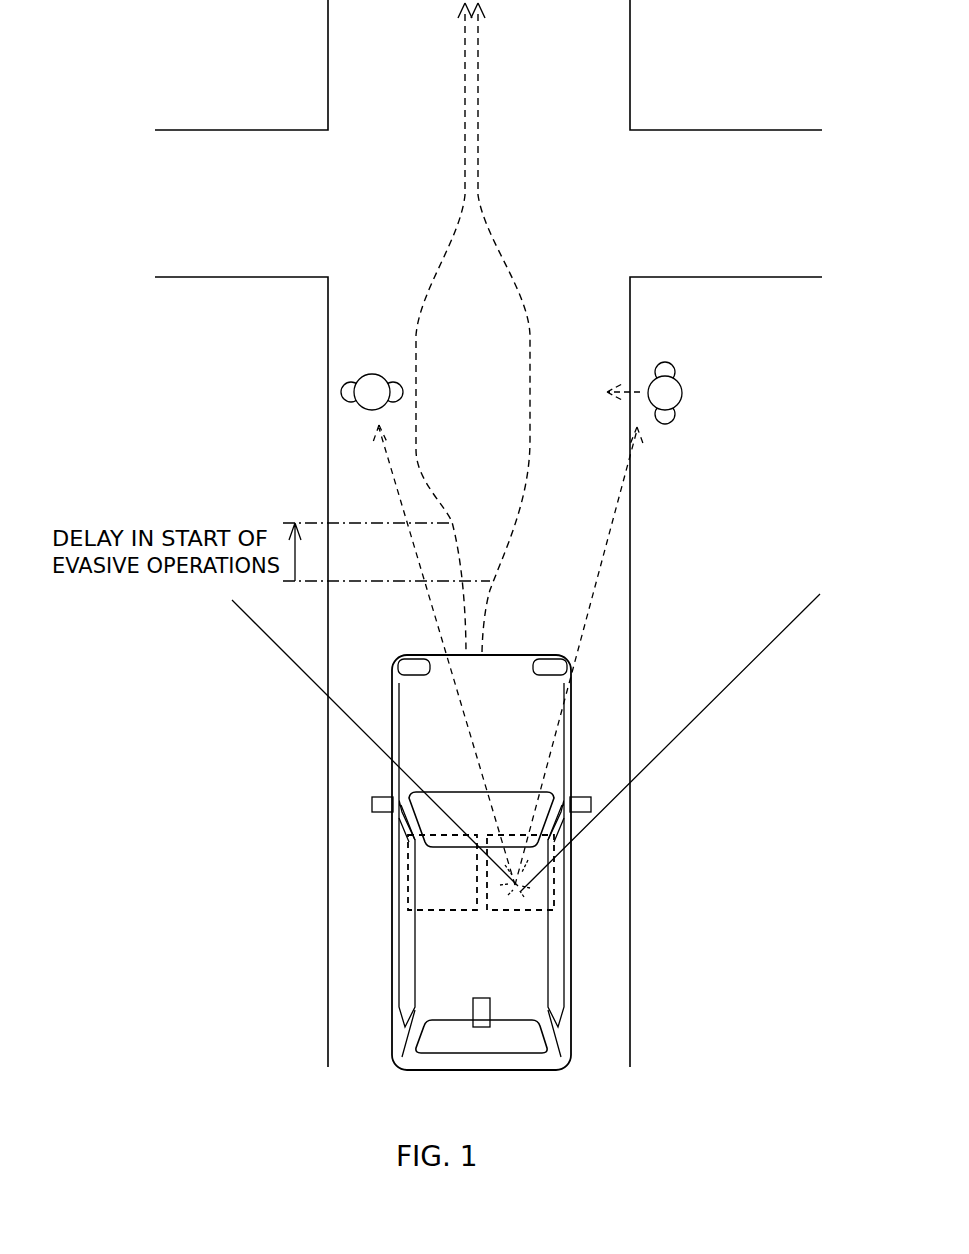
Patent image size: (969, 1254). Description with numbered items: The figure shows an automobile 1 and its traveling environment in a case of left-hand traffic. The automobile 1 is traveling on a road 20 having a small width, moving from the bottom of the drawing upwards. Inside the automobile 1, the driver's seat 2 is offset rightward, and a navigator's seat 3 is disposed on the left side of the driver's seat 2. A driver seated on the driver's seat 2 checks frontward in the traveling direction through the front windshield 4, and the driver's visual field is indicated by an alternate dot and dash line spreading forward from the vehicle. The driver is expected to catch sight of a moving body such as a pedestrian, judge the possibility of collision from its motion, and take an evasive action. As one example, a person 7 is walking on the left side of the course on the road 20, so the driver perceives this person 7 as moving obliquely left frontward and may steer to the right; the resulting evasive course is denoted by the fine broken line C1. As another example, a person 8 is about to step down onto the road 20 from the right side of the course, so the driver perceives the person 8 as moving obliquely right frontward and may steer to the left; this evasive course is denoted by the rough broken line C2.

The automobile 1 is at (352, 887).
The driver's seat 2 is at (558, 905).
The navigator's seat 3 is at (437, 890).
The front windshield 4 is at (512, 810).
The person 7 is at (352, 390).
The person 8 is at (672, 392).
The road 20 is at (622, 1024).
The evasive course C1 is at (507, 270).
The evasive course C2 is at (445, 262).